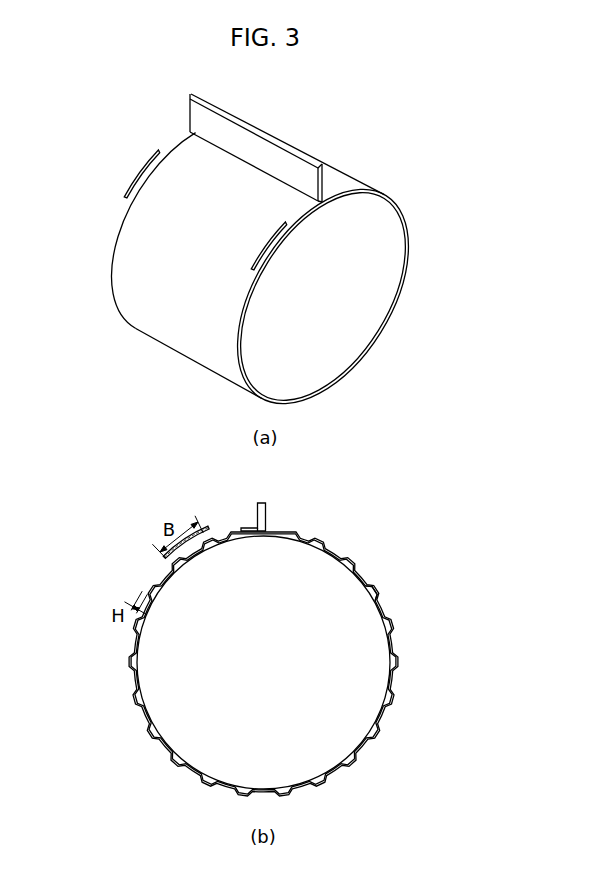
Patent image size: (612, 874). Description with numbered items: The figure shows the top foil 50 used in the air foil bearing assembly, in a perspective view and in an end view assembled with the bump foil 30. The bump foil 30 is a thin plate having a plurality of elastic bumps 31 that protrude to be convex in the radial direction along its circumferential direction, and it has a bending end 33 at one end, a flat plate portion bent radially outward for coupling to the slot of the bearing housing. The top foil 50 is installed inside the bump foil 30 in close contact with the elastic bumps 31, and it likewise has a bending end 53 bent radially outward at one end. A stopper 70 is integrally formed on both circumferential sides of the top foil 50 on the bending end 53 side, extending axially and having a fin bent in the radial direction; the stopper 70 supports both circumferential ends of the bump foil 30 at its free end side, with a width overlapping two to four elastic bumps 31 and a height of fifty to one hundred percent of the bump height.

The bump foil 30 is at (291, 664).
The elastic bumps 31 is at (370, 572).
The bending end 33 is at (266, 510).
The top foil 50 is at (278, 441).
The bending end 53 is at (198, 118).
The stopper 70 is at (114, 565).